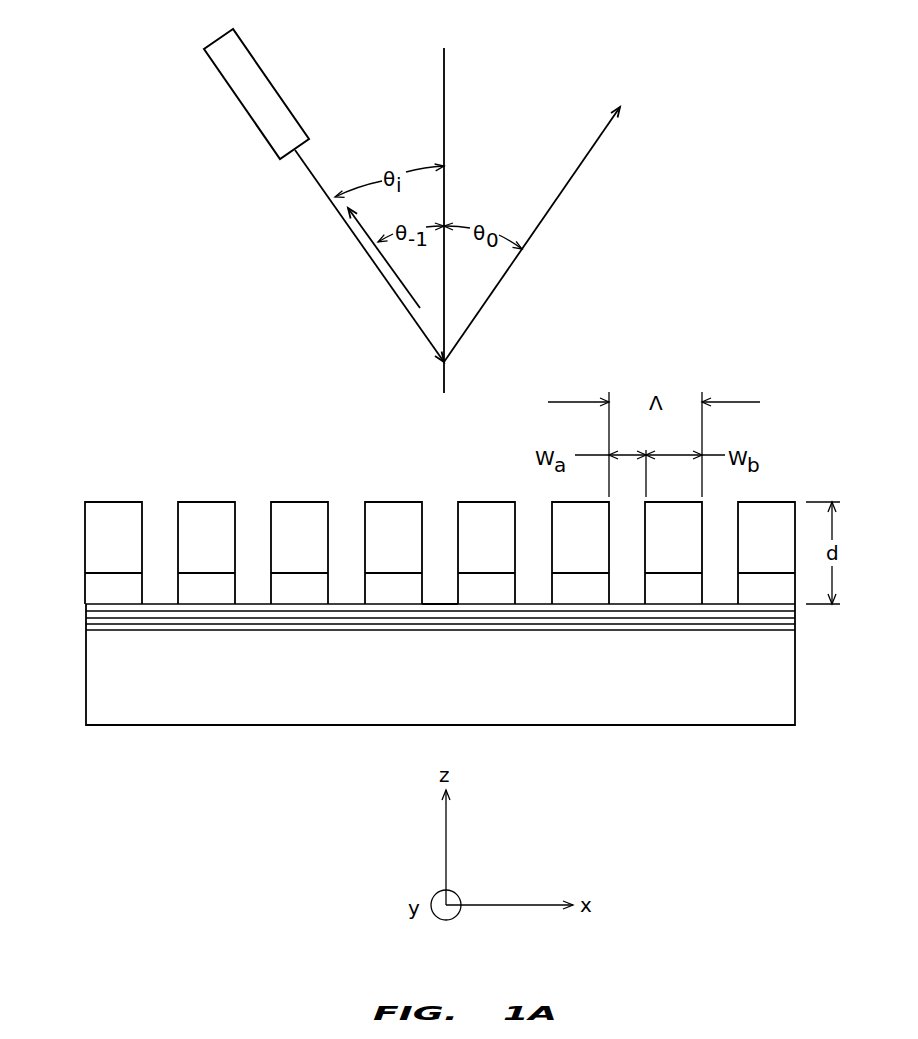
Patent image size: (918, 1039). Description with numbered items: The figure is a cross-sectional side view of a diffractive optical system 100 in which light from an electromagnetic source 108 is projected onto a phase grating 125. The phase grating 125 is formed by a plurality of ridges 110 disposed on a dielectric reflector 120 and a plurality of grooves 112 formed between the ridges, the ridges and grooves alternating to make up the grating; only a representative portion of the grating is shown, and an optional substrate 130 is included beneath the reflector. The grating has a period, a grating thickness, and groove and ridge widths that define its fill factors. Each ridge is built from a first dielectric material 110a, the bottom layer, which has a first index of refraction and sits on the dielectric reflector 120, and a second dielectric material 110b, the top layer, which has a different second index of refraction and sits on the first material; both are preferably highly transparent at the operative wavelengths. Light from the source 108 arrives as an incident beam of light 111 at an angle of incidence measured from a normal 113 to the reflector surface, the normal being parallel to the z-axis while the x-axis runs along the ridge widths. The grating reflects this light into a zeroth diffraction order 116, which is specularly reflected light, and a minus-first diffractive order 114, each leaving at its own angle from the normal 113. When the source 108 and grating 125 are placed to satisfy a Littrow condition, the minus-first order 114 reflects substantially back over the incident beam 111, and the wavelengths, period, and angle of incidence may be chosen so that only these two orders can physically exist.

The diffractive optical system 100 is at (457, 583).
The electromagnetic source 108 is at (216, 40).
The incident beam of light 111 is at (318, 182).
The normal 113 is at (444, 75).
The minus-first diffractive order 114 is at (385, 264).
The zeroth diffraction order 116 is at (565, 190).
The ridges 110 is at (421, 498).
The first dielectric material 110a is at (85, 597).
The second dielectric material 110b is at (85, 512).
The grooves 112 is at (458, 498).
The dielectric reflector 120 is at (795, 625).
The phase grating 125 is at (745, 500).
The substrate 130 is at (530, 725).